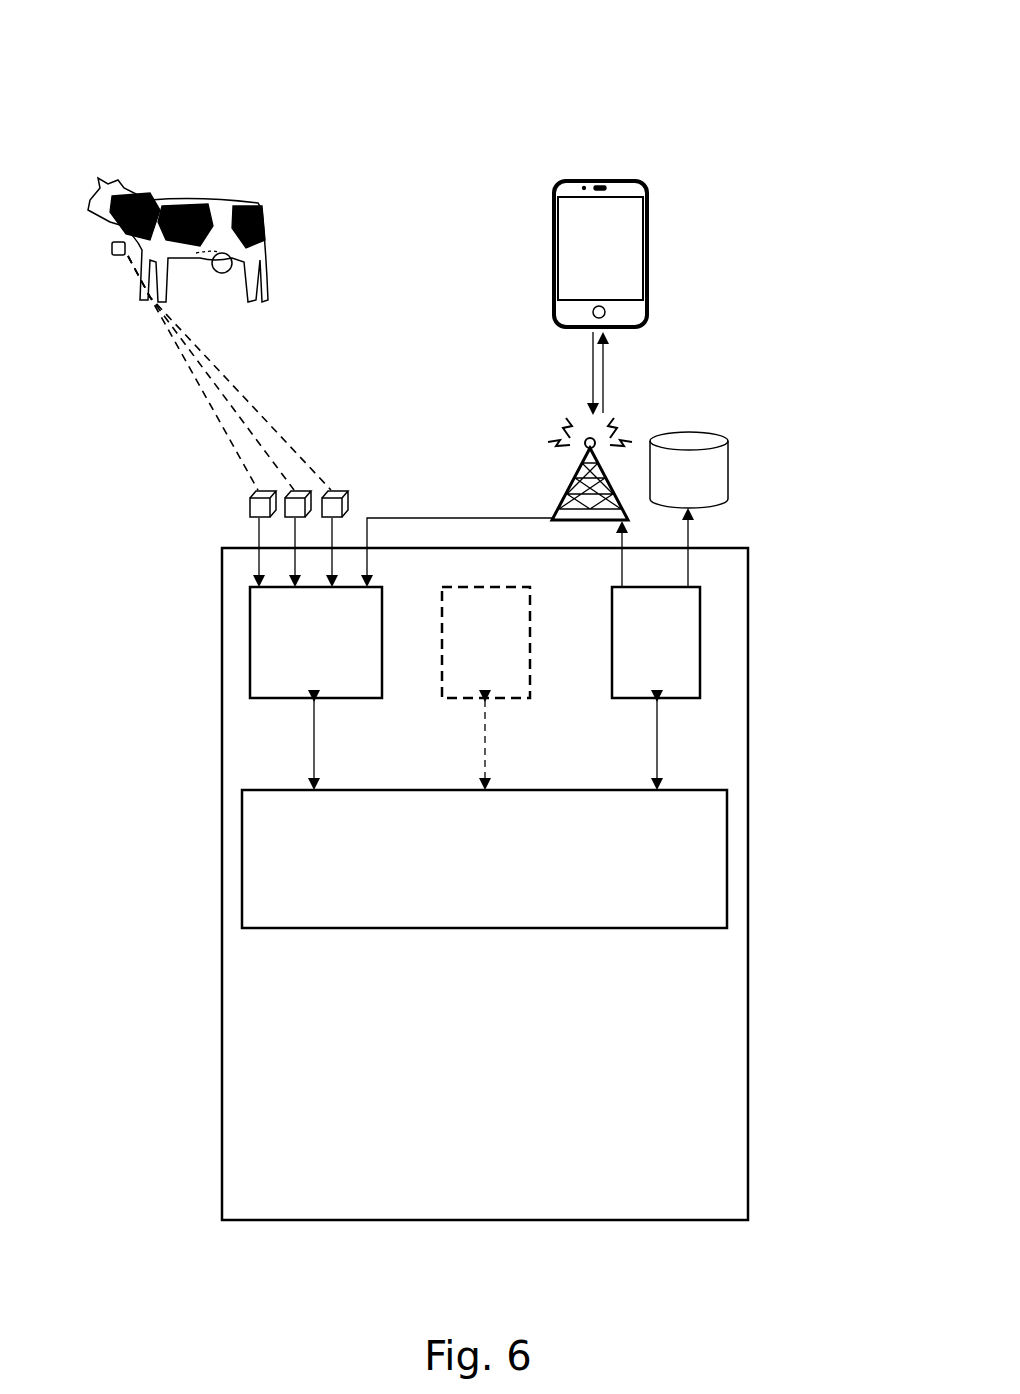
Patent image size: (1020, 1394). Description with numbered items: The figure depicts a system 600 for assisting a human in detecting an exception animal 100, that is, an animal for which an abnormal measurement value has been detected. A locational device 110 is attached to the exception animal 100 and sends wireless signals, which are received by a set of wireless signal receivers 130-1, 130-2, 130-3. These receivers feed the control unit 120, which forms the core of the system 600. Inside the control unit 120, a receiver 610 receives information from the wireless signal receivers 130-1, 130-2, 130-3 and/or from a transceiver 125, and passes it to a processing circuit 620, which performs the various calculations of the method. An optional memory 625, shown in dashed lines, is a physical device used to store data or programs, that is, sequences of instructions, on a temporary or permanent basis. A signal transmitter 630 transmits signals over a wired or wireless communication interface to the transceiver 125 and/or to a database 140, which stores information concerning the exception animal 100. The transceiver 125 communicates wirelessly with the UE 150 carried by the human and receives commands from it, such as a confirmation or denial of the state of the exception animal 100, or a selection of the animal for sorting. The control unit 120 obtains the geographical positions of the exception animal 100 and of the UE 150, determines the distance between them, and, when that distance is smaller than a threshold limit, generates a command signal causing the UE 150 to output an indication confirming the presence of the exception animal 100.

The system 600 is at (790, 72).
The exception animal 100 is at (156, 200).
The locational device 110 is at (110, 247).
The wireless signal receiver 130-1 is at (250, 506).
The wireless signal receiver 130-2 is at (297, 492).
The wireless signal receiver 130-3 is at (348, 498).
The transceiver 125 is at (568, 486).
The database 140 is at (670, 490).
The UE 150 is at (648, 256).
The control unit 120 is at (474, 1167).
The receiver 610 is at (297, 654).
The processing circuit 620 is at (471, 871).
The memory 625 is at (467, 654).
The signal transmitter 630 is at (637, 654).